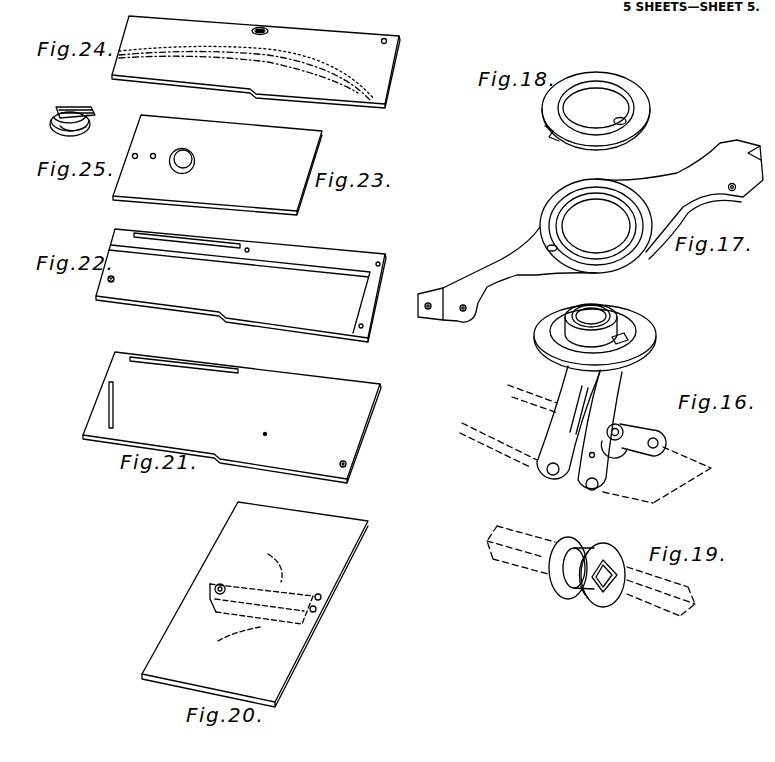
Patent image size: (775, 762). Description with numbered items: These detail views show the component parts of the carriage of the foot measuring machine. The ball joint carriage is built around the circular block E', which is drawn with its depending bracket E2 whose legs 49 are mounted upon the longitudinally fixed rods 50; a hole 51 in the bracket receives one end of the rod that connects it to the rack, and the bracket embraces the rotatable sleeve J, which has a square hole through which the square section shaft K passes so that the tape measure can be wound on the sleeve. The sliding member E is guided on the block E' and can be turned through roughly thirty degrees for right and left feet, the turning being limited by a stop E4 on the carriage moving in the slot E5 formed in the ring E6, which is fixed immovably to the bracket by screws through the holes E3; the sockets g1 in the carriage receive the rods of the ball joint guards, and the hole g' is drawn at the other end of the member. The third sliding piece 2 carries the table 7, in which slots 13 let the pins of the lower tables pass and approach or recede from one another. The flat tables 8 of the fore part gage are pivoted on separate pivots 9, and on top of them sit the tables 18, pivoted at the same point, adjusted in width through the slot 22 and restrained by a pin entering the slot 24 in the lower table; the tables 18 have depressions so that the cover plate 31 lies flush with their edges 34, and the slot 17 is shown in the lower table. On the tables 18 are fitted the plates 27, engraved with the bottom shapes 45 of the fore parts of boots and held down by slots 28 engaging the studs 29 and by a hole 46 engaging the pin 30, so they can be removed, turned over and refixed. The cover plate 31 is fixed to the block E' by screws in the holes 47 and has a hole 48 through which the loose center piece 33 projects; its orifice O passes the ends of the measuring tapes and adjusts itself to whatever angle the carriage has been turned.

In FIG. 24, the plate 27 is at (246, 64).
In FIG. 24, the bottom shapes 45 is at (250, 51).
In FIG. 24, the slot 28 is at (244, 31).
In FIG. 24, the hole 46 is at (375, 44).
In FIG. 25, the orifice O is at (58, 107).
In FIG. 25, the center piece 33 is at (76, 125).
In FIG. 23, the cover plate 31 is at (217, 165).
In FIG. 23, the holes 47 is at (128, 153).
In FIG. 16, the holes 47 is at (590, 313).
In FIG. 23, the hole 48 is at (186, 165).
In FIG. 22, the table 18 is at (241, 285).
In FIG. 22, the edges 34 is at (312, 272).
In FIG. 22, the slot 22 is at (107, 281).
In FIG. 22, the stud 29 is at (242, 248).
In FIG. 22, the pin 30 is at (373, 262).
In FIG. 22, the pivot 9 is at (356, 329).
In FIG. 21, the pivot 9 is at (335, 460).
In FIG. 20, the pivot 9 is at (312, 599).
In FIG. 21, the table 8 is at (232, 417).
In FIG. 21, the slot 17 is at (182, 373).
In FIG. 21, the slot 24 is at (105, 406).
In FIG. 20, the table 7 is at (255, 604).
In FIG. 20, the sliding piece 2 is at (282, 592).
In FIG. 20, the slots 13 is at (250, 604).
In FIG. 18, the ring E6 is at (622, 85).
In FIG. 18, the holes E3 is at (619, 120).
In FIG. 16, the holes E3 is at (617, 335).
In FIG. 18, the slot E5 is at (546, 139).
In FIG. 17, the sliding carriage E is at (590, 231).
In FIG. 17, the stop E4 is at (548, 247).
In FIG. 17, the pivot hole g' is at (729, 204).
In FIG. 17, the sockets g1 is at (423, 312).
In FIG. 16, the depending bracket E2 is at (620, 359).
In FIG. 16, the circular block E' is at (626, 316).
In FIG. 16, the legs 49 is at (536, 437).
In FIG. 16, the hole 51 is at (587, 456).
In FIG. 16, the rods 50 is at (684, 466).
In FIG. 19, the shaft K is at (525, 559).
In FIG. 19, the sleeve J is at (572, 589).